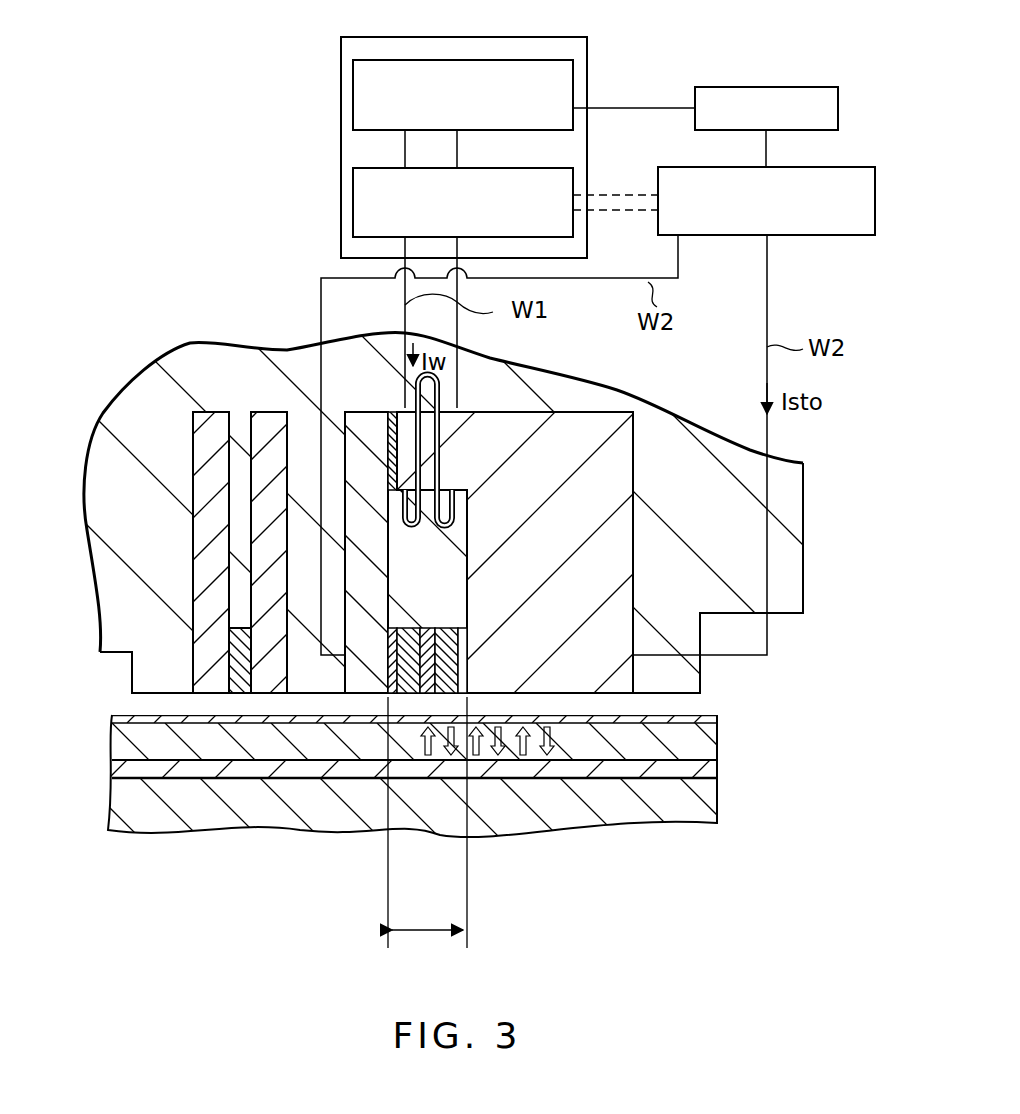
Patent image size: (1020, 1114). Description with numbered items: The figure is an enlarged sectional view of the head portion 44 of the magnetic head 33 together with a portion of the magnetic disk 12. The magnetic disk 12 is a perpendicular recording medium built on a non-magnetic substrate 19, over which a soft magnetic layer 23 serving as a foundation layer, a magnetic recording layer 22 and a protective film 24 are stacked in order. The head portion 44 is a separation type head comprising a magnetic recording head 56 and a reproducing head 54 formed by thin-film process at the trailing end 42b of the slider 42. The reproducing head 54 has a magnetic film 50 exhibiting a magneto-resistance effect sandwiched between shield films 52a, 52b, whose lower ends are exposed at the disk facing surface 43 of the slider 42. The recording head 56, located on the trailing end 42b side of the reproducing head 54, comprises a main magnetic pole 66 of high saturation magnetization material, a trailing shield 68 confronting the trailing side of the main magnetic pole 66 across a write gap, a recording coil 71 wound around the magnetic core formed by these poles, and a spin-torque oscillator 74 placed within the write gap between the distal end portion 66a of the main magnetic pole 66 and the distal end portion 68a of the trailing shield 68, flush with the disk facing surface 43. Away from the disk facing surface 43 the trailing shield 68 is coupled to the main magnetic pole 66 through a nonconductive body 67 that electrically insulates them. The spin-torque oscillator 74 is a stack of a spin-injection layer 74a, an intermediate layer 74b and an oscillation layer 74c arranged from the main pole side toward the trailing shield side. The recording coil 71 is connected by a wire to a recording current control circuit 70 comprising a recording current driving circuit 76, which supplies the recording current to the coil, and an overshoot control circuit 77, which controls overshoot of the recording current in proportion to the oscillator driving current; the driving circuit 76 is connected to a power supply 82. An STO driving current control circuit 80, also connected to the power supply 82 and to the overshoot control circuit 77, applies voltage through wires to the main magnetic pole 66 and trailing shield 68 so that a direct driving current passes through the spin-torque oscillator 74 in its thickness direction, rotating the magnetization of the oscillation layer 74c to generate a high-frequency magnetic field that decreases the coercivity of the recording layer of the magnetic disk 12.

The magnetic disk 12 is at (431, 786).
The substrate 19 is at (415, 835).
The magnetic recording layer 22 is at (625, 742).
The soft magnetic layer 23 is at (653, 764).
The protective film 24 is at (697, 710).
The magnetic head 33 is at (143, 256).
The slider 42 is at (132, 403).
The trailing end 42b is at (803, 565).
The disk facing surface 43 is at (312, 690).
The head portion 44 is at (302, 338).
The magnetic film 50 is at (247, 693).
The shield film 52a is at (262, 525).
The shield film 52b is at (205, 580).
The reproducing head 54 is at (302, 578).
The magnetic recording head 56 is at (563, 342).
The main magnetic pole 66 is at (365, 427).
The distal end portion 66a is at (360, 690).
The nonconductive body 67 is at (393, 407).
The trailing shield 68 is at (577, 437).
The distal end portion 68a is at (570, 693).
The recording current control circuit 70 is at (439, 129).
The recording coil 71 is at (440, 393).
The spin-torque oscillator 74 is at (381, 620).
The spin-injection layer 74a is at (398, 695).
The intermediate layer 74b is at (418, 697).
The oscillation layer 74c is at (466, 697).
The recording current driving circuit 76 is at (353, 100).
The overshoot control circuit 77 is at (353, 210).
The STO driving current control circuit 80 is at (823, 167).
The power supply 82 is at (780, 87).